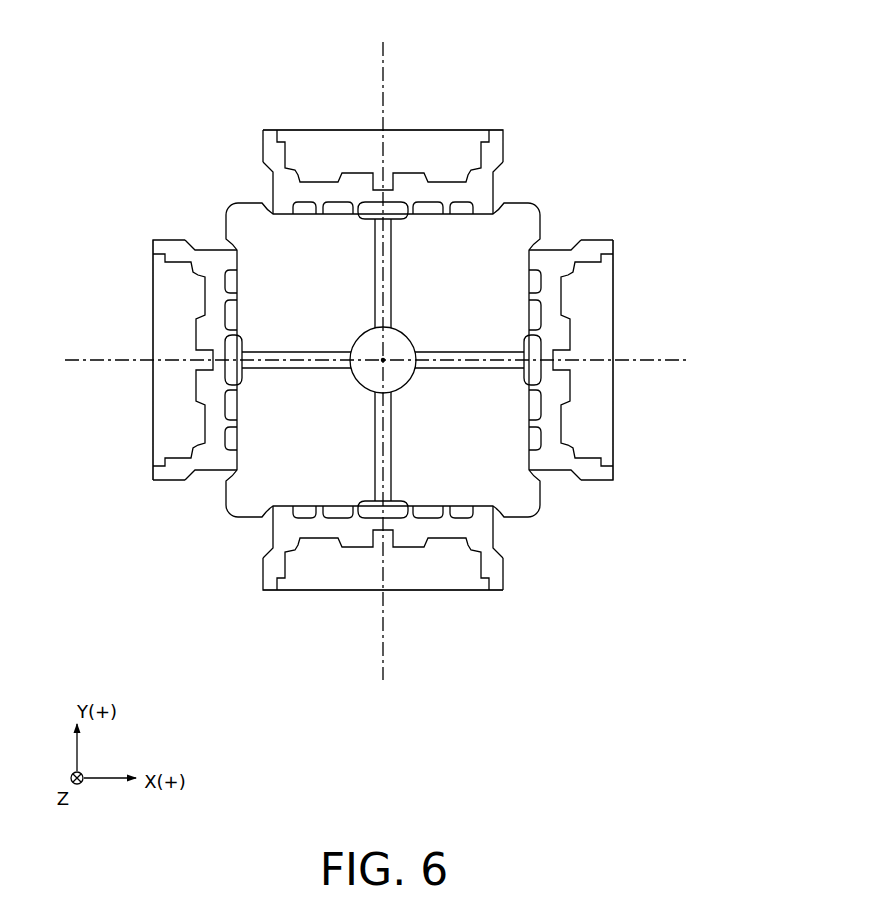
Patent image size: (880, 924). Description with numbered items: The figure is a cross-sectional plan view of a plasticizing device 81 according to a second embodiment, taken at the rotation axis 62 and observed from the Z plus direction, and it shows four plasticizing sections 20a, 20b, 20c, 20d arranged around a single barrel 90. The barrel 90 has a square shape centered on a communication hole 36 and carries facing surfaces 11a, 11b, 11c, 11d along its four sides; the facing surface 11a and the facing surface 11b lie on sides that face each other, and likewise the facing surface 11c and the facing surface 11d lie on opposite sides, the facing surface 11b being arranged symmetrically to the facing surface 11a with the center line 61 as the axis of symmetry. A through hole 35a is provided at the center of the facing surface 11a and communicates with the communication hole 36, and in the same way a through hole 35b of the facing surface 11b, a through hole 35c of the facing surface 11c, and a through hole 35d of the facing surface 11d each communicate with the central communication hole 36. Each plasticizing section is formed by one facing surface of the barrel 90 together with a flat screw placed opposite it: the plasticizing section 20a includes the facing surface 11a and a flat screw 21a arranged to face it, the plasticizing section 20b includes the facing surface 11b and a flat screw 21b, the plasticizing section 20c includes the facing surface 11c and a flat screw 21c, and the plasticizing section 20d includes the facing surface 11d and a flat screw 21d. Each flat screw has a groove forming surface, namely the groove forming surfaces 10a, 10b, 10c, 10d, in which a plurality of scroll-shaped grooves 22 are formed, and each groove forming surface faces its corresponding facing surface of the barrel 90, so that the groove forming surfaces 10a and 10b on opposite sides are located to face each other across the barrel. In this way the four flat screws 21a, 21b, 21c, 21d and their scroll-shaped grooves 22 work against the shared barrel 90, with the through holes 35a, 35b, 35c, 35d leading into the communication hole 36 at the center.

The groove forming surface 10a is at (689, 416).
The groove forming surface 10b is at (87, 414).
The groove forming surface 10c is at (465, 651).
The groove forming surface 10d is at (297, 78).
The facing surface 11a is at (541, 400).
The facing surface 11b is at (238, 392).
The facing surface 11c is at (456, 504).
The facing surface 11d is at (313, 213).
The plasticizing section 20a is at (627, 228).
The plasticizing section 20b is at (146, 226).
The plasticizing section 20c is at (513, 587).
The plasticizing section 20d is at (236, 136).
The flat screw 21a is at (558, 244).
The flat screw 21b is at (212, 247).
The flat screw 21c is at (498, 540).
The flat screw 21d is at (268, 180).
The scroll-shaped groove 22 is at (345, 212).
The through hole 35a is at (474, 351).
The through hole 35b is at (285, 351).
The through hole 35c is at (374, 470).
The through hole 35d is at (393, 254).
The communication hole 36 is at (364, 387).
The center line 61 is at (385, 358).
The rotation axis 62 is at (665, 358).
The plasticizing device 81 is at (653, 128).
The barrel 90 is at (527, 210).